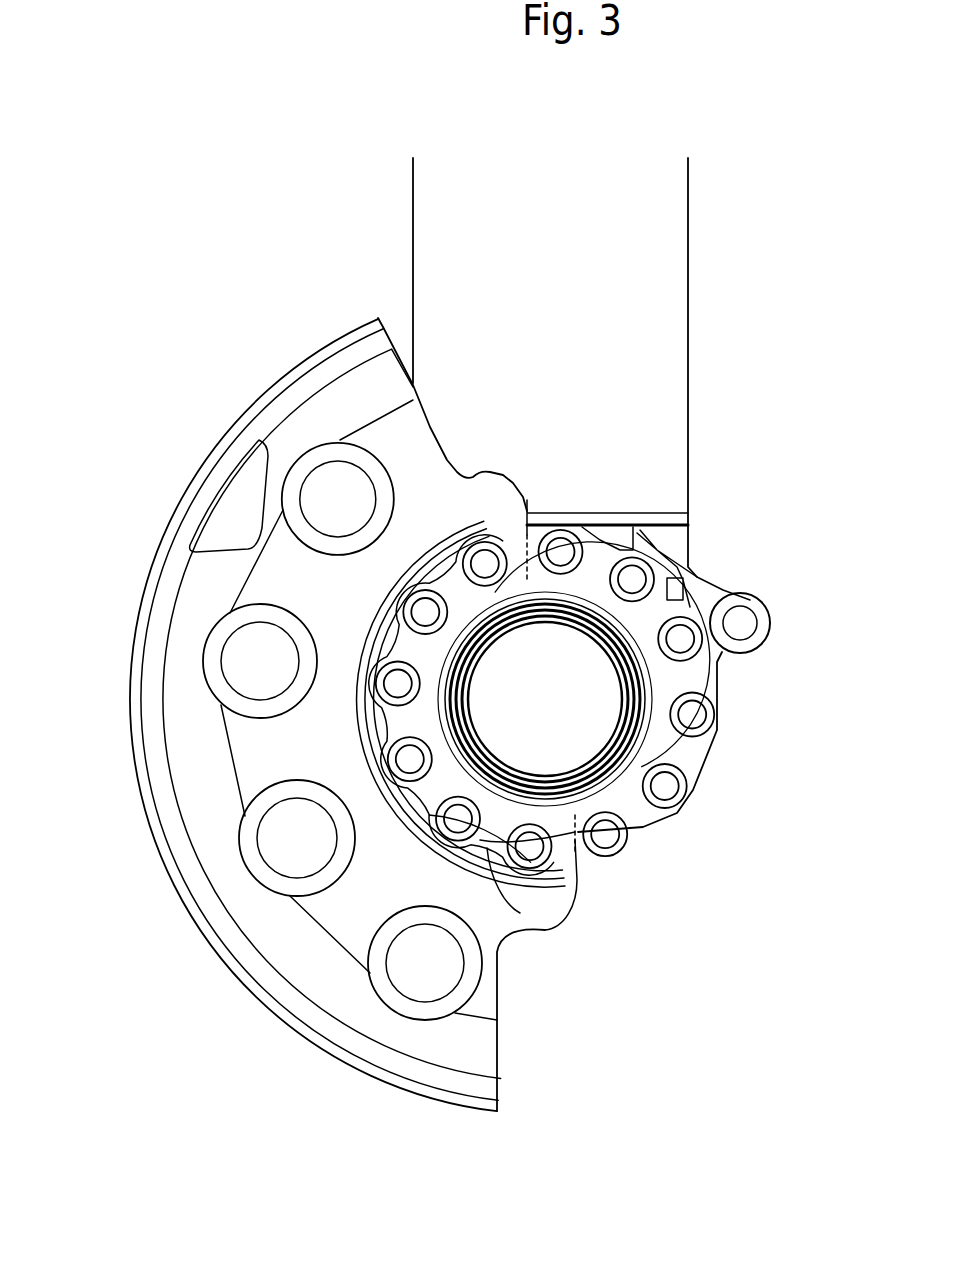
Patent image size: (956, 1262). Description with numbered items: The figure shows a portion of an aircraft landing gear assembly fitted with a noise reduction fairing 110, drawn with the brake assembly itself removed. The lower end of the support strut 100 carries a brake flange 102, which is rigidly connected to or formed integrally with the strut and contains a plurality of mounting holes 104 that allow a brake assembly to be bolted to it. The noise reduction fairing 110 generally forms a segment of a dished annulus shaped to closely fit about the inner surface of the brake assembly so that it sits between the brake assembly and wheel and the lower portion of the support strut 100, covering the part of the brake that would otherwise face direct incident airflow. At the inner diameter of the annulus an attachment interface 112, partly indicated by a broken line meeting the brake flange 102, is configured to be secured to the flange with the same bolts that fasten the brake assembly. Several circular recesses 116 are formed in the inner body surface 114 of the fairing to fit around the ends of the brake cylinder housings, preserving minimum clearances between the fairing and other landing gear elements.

The support strut 100 is at (665, 244).
The brake flange 102 is at (685, 755).
The mounting holes 104 is at (677, 812).
The noise reduction fairing 110 is at (308, 400).
The attachment interface 112 is at (495, 837).
The inner body surface 114 is at (338, 923).
The circular recesses 116 is at (257, 658).